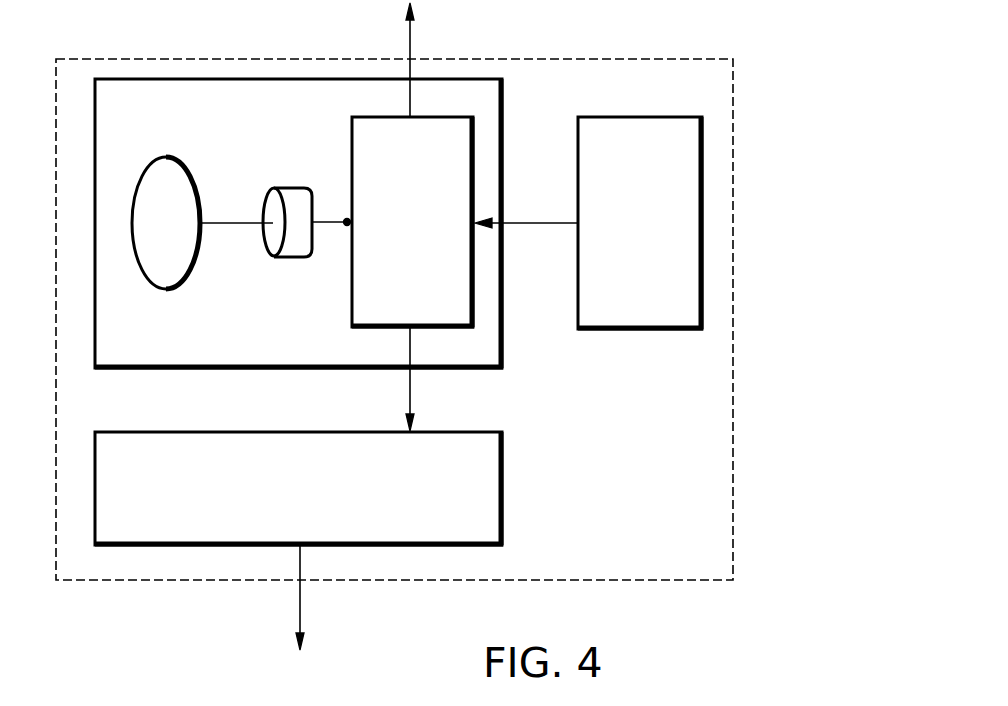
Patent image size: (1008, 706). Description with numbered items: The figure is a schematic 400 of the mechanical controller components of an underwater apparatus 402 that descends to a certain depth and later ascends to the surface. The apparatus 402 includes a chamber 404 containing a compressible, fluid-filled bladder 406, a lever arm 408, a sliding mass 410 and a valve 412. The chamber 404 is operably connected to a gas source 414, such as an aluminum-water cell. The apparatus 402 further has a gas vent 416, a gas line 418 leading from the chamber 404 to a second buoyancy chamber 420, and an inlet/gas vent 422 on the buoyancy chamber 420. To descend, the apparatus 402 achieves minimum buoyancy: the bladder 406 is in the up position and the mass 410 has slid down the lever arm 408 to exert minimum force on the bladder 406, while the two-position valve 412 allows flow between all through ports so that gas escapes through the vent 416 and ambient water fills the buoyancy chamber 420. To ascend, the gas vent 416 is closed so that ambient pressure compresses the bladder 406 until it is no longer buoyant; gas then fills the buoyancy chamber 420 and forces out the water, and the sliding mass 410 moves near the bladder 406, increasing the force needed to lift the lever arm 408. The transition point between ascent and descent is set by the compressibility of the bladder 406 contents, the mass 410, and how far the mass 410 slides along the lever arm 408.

The schematic 400 is at (786, 490).
The apparatus 402 is at (735, 125).
The chamber 404 is at (504, 88).
The compressible, fluid-filled bladder 406 is at (186, 234).
The lever arm 408 is at (228, 222).
The sliding mass 410 is at (290, 188).
The valve 412 is at (430, 233).
The gas source 414 is at (658, 231).
The gas vent 416 is at (412, 28).
The gas line 418 is at (412, 390).
The second buoyancy chamber 420 is at (505, 483).
The inlet/gas vent 422 is at (302, 606).